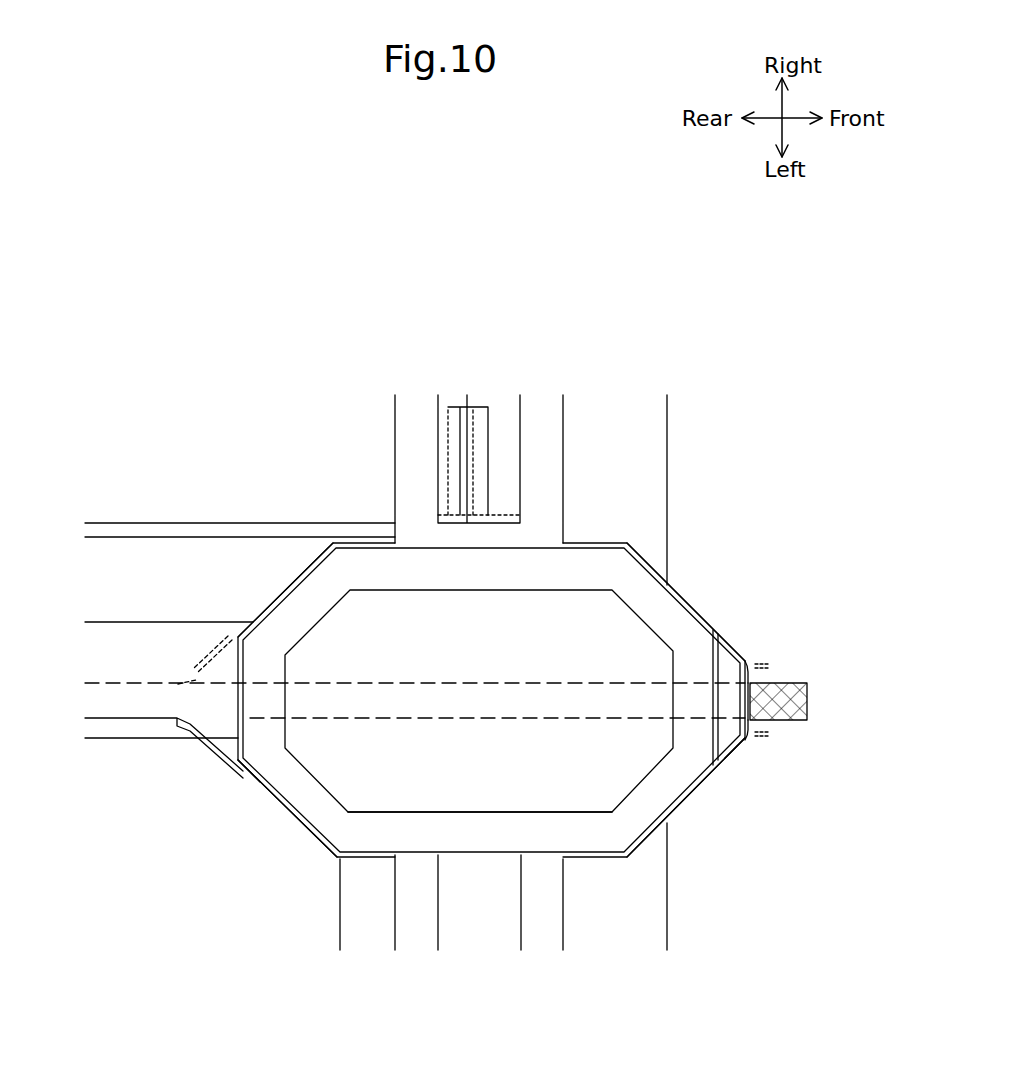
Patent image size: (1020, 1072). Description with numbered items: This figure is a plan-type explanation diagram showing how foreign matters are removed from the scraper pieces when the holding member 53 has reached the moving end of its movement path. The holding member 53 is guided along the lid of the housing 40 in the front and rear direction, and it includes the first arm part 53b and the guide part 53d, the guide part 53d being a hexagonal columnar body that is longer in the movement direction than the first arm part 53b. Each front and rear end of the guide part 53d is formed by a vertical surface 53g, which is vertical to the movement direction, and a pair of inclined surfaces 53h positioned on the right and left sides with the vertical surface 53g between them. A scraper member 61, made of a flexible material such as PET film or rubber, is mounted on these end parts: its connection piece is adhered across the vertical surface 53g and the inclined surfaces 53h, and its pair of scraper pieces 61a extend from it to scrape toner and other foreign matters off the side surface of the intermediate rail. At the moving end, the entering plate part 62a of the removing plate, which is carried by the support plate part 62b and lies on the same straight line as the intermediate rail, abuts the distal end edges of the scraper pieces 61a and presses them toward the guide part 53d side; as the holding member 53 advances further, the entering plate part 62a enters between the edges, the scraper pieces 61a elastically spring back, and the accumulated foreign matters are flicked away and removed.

The housing 40 is at (677, 438).
The holding member 53 is at (615, 875).
The first arm part 53b is at (408, 450).
The guide part 53d is at (530, 837).
The vertical surface 53g is at (215, 757).
The inclined surfaces 53h is at (273, 598).
The scraper member 61 is at (196, 746).
The scraper pieces 61a is at (215, 655).
The entering plate part 62a is at (797, 703).
The support plate part 62b is at (735, 702).